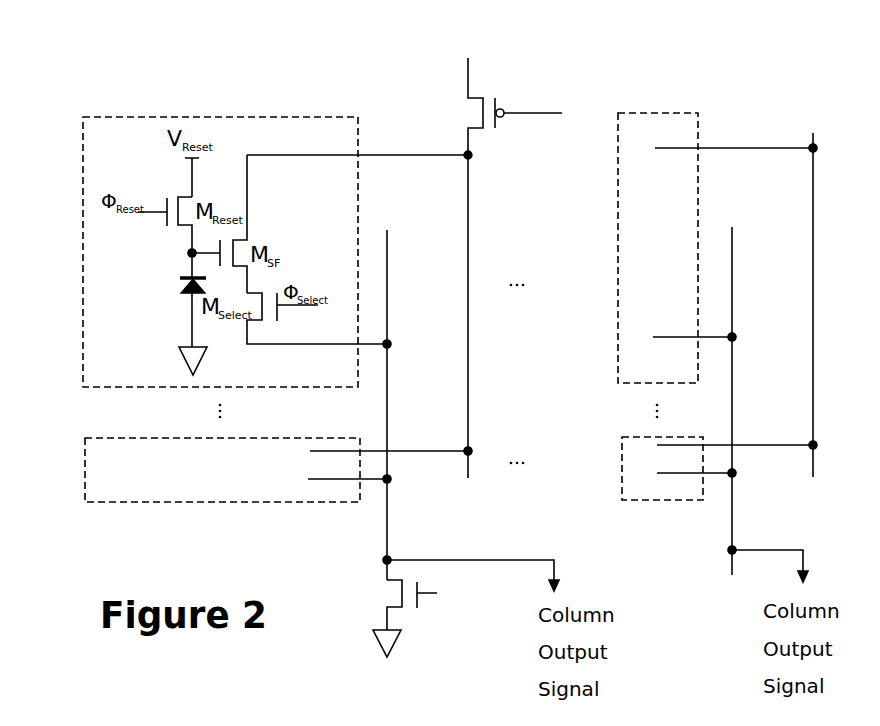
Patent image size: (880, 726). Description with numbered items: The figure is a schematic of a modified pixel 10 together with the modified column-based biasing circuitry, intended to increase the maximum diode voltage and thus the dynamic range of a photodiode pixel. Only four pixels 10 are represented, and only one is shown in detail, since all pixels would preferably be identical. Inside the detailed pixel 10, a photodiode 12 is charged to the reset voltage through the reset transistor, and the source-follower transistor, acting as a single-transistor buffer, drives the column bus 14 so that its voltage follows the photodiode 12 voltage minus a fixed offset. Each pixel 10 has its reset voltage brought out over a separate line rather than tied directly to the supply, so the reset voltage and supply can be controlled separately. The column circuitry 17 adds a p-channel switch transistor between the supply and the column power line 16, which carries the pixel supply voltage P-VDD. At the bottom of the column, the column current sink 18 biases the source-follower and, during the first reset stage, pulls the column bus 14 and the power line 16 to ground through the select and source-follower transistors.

The modified pixel 10 is at (81, 318).
The photodiode 12 is at (172, 283).
The column bus 14 is at (387, 250).
The column power line 16 is at (468, 230).
The column circuitry 17 is at (439, 84).
The column current sink 18 is at (382, 592).